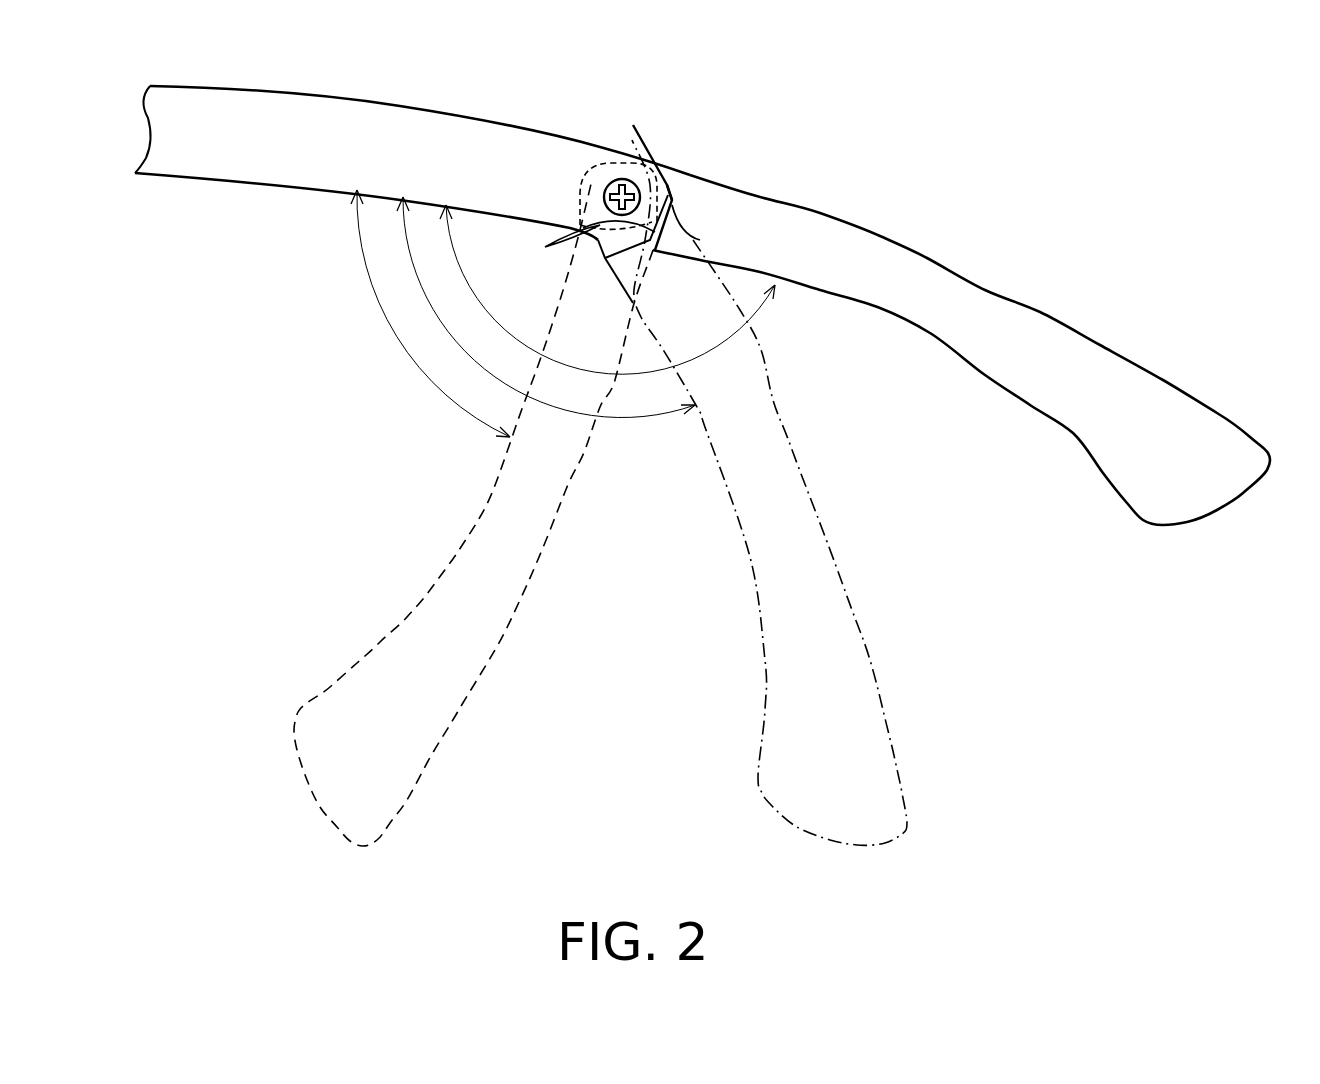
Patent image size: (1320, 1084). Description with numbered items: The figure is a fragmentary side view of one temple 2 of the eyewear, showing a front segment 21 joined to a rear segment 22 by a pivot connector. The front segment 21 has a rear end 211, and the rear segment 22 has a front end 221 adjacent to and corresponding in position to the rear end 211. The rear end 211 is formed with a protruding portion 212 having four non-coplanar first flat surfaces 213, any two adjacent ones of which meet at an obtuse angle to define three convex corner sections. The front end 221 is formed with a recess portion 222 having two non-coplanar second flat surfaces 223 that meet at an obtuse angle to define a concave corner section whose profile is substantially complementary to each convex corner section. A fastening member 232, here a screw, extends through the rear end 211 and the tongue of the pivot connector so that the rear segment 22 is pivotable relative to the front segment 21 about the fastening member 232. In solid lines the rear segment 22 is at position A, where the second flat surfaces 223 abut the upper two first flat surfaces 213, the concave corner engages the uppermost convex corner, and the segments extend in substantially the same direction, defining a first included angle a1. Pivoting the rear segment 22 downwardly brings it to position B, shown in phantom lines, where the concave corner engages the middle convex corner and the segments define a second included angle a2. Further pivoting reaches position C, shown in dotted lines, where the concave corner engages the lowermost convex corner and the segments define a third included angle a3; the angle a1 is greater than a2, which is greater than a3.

The temple 2 is at (687, 90).
The front segment 21 is at (372, 130).
The rear end 211 is at (484, 150).
The protruding portion 212 is at (655, 152).
The first flat surfaces 213 is at (600, 165).
The rear segment 22 is at (1075, 345).
The front end 221 is at (715, 207).
The recess portion 222 is at (681, 178).
The second flat surfaces 223 is at (665, 180).
The fastening member 232 is at (592, 193).
The position A is at (1231, 526).
The position B is at (769, 508).
The position C is at (471, 513).
The first included angle a1 is at (607, 300).
The second included angle a2 is at (546, 307).
The third included angle a3 is at (430, 313).